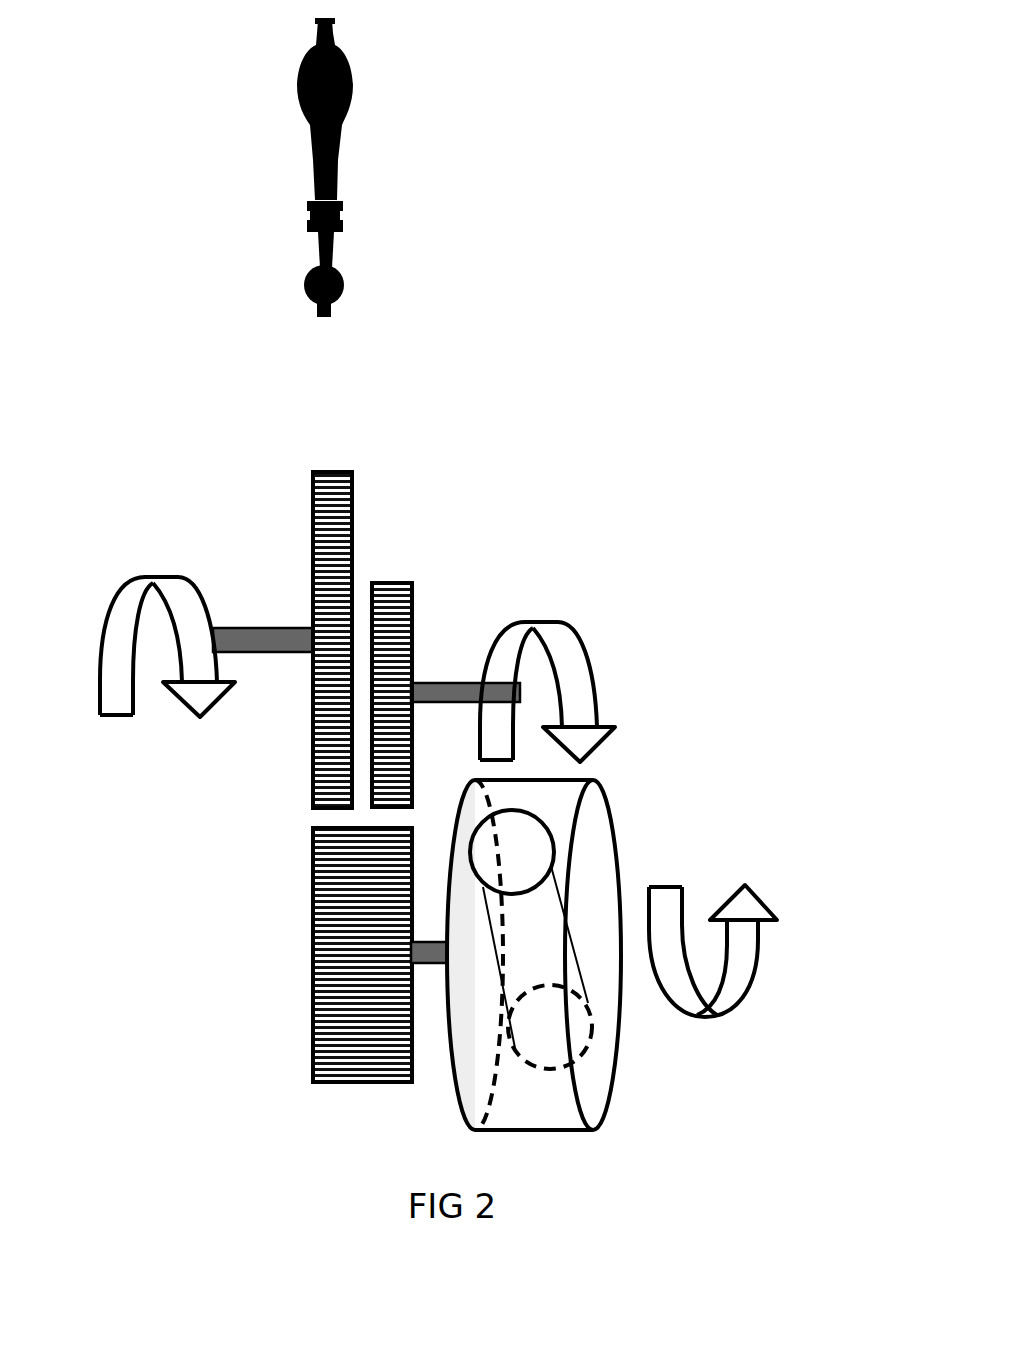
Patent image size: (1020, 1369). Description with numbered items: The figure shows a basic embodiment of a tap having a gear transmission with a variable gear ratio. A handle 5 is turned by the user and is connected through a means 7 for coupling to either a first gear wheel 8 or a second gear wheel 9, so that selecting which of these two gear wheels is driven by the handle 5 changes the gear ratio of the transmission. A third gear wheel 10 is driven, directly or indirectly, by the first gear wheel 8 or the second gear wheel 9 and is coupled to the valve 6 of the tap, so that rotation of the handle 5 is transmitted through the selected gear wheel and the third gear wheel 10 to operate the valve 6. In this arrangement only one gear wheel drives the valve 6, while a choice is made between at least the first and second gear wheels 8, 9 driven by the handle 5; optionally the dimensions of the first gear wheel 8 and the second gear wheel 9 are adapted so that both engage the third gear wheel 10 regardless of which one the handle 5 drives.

The handle 5 is at (347, 140).
The valve 6 is at (620, 1097).
The means for coupling the handle to the first or second gear wheel 7 is at (325, 345).
The first gear wheel 8 is at (357, 502).
The second gear wheel 9 is at (413, 623).
The third gear wheel 10 is at (293, 1027).